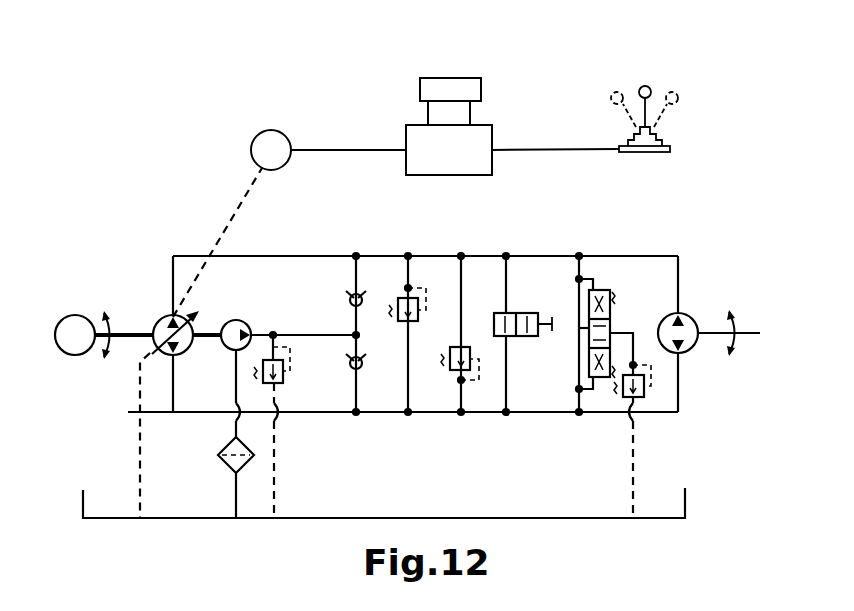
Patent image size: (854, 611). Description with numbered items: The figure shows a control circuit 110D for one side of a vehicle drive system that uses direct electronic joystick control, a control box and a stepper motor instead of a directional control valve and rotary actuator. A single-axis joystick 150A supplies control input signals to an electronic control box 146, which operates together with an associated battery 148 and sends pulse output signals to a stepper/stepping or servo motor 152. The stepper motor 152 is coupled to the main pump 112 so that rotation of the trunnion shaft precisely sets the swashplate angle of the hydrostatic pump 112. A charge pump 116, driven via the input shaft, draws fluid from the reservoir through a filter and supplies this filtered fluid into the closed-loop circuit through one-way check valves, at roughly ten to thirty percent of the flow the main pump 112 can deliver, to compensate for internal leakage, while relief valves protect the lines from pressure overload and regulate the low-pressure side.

The control circuit 110D is at (610, 53).
The main pump 112 is at (163, 320).
The charge pump 116 is at (238, 322).
The electronic control box 146 is at (456, 163).
The battery 148 is at (437, 82).
The single-axis joystick 150A is at (650, 90).
The stepper motor 152 is at (268, 130).